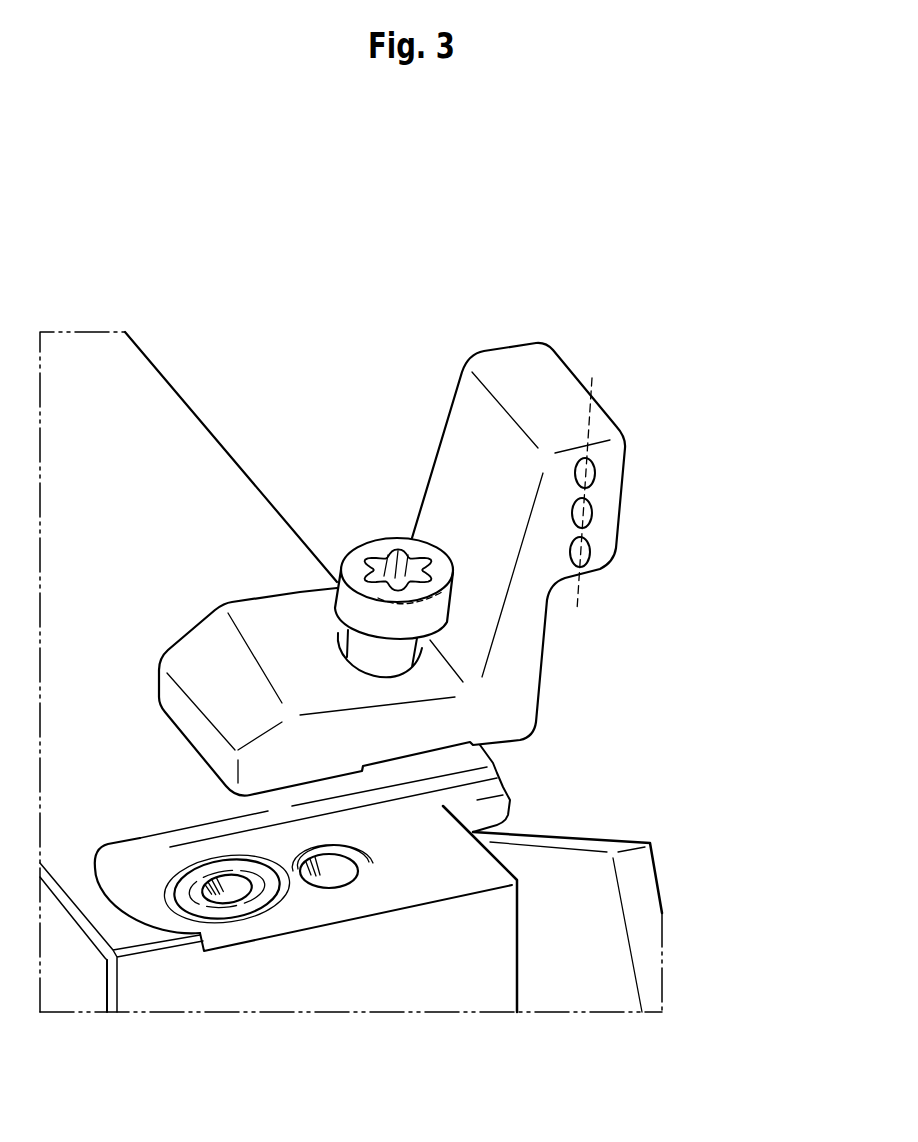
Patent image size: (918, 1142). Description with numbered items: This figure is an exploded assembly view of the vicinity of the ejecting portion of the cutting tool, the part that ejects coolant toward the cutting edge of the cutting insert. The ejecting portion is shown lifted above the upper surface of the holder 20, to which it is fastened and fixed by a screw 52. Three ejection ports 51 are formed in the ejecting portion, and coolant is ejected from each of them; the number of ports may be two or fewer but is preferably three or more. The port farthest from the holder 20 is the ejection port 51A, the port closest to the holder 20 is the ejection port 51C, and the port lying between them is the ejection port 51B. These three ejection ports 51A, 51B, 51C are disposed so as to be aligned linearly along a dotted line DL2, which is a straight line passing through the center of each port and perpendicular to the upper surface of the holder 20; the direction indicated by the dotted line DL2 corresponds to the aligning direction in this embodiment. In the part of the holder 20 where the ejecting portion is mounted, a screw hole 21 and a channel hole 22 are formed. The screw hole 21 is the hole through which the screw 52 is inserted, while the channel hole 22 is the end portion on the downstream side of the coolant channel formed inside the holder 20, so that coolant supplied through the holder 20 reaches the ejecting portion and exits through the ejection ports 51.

The holder 20 is at (212, 453).
The screw 52 is at (368, 545).
The ejection ports 51 is at (676, 520).
The ejection port 51A is at (591, 472).
The ejection port 51B is at (591, 515).
The ejection port 51C is at (589, 553).
The dotted line DL2 is at (588, 427).
The channel hole 22 is at (233, 882).
The screw hole 21 is at (325, 873).